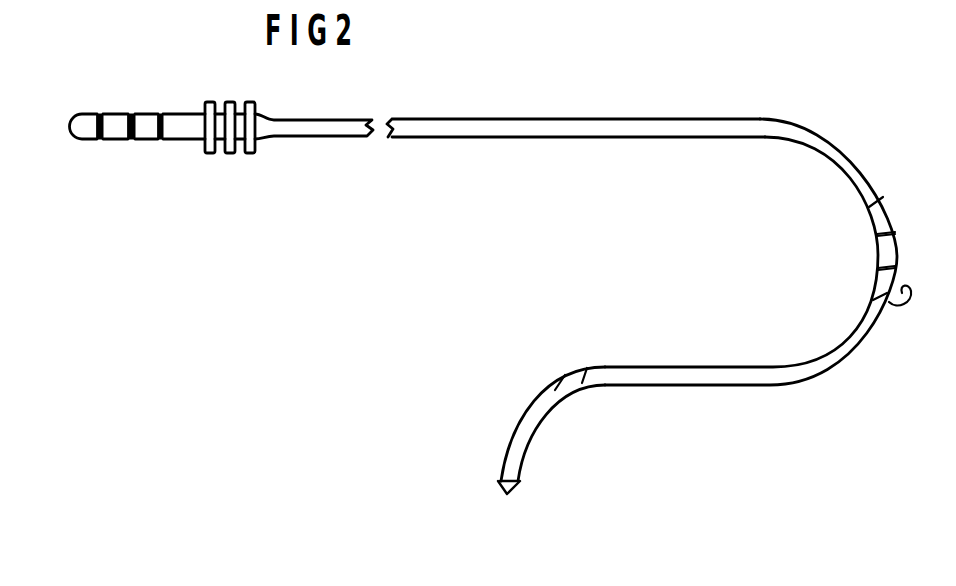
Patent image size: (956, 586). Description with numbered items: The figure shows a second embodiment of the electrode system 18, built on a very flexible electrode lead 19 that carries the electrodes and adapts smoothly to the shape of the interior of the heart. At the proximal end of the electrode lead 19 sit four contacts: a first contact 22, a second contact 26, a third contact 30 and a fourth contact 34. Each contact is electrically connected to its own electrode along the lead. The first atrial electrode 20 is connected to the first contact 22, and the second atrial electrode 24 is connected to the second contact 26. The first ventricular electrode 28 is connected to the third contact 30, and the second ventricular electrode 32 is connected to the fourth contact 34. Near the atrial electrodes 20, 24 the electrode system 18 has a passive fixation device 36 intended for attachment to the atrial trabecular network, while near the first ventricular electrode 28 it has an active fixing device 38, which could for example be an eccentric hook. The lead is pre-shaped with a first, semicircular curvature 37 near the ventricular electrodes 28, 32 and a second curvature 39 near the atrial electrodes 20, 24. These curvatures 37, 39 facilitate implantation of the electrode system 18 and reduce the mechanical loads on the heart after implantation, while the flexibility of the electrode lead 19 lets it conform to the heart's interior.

The electrode system 18 is at (462, 104).
The electrode lead 19 is at (620, 129).
The first atrial electrode 20 is at (506, 496).
The first contact 22 is at (83, 112).
The second atrial electrode 24 is at (565, 375).
The second contact 26 is at (117, 141).
The first ventricular electrode 28 is at (876, 285).
The third contact 30 is at (143, 112).
The second ventricular electrode 32 is at (875, 214).
The fourth contact 34 is at (180, 141).
The passive fixation device 36 is at (496, 468).
The first, semicircular curvature 37 is at (878, 247).
The active fixing device 38 is at (905, 310).
The second curvature 39 is at (520, 416).